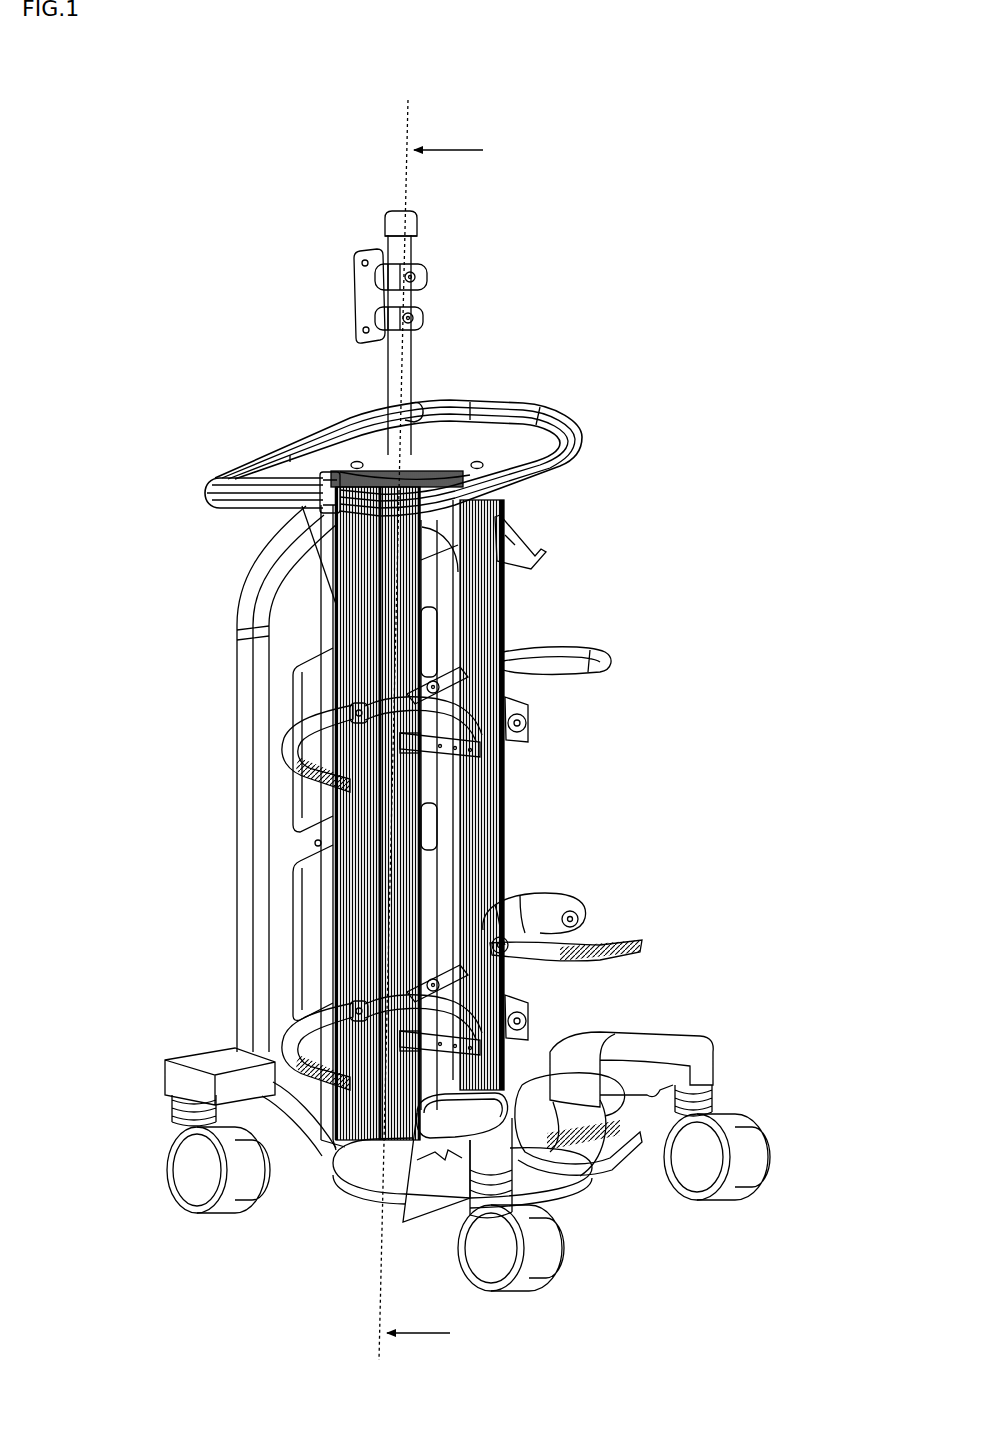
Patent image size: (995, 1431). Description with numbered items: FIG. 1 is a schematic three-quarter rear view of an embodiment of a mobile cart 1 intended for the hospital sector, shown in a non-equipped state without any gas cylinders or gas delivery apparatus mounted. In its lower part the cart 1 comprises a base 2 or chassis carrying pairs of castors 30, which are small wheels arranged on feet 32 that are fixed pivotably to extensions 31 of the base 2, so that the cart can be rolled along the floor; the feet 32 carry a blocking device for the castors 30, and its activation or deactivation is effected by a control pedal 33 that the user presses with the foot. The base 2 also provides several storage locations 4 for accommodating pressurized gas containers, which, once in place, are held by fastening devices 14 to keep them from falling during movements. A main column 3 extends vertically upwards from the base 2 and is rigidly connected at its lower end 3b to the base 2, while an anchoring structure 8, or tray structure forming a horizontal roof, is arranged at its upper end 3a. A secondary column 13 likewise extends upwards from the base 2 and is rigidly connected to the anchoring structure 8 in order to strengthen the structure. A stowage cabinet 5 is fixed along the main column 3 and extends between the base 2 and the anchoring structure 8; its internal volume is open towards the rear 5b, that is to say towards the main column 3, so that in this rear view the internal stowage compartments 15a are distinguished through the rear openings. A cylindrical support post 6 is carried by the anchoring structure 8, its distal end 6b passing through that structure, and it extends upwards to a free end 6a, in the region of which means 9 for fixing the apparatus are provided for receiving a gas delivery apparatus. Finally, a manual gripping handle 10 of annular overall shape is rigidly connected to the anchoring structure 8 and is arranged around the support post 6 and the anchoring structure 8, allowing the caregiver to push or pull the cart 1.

The mobile cart 1 is at (716, 343).
The base 2 is at (378, 1205).
The main column 3 is at (328, 633).
The upper end 3a is at (275, 517).
The lower end 3b is at (332, 1146).
The storage locations 4 is at (367, 1176).
The stowage cabinet 5 is at (231, 802).
The rear 5b is at (303, 890).
The support post 6 is at (383, 374).
The free end 6a is at (431, 256).
The distal end 6b is at (408, 395).
The anchoring structure 8 is at (450, 438).
The means for fixing the apparatus 9 is at (350, 286).
The manual gripping handle 10 is at (282, 441).
The secondary column 13 is at (500, 627).
The fastening devices 14 is at (584, 682).
The internal stowage compartments 15a is at (304, 708).
The castors 30 is at (227, 1131).
The extensions 31 is at (170, 1053).
The feet 32 is at (165, 1110).
The control pedal 33 is at (576, 1237).